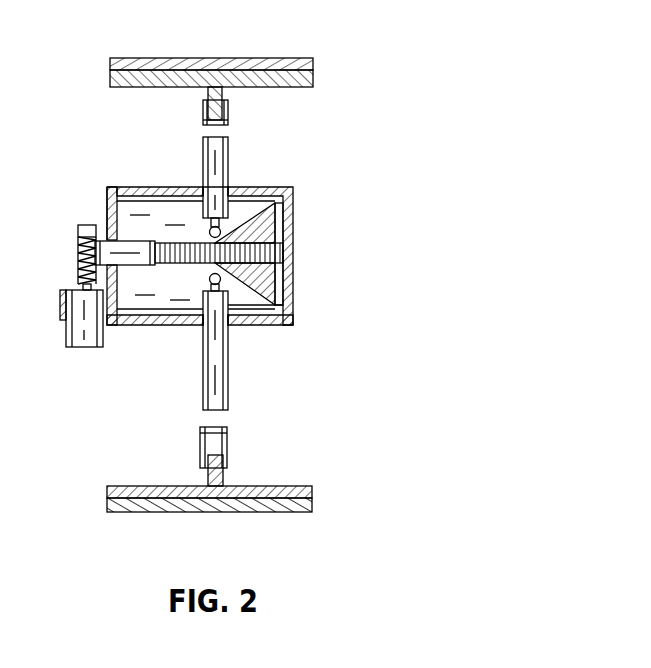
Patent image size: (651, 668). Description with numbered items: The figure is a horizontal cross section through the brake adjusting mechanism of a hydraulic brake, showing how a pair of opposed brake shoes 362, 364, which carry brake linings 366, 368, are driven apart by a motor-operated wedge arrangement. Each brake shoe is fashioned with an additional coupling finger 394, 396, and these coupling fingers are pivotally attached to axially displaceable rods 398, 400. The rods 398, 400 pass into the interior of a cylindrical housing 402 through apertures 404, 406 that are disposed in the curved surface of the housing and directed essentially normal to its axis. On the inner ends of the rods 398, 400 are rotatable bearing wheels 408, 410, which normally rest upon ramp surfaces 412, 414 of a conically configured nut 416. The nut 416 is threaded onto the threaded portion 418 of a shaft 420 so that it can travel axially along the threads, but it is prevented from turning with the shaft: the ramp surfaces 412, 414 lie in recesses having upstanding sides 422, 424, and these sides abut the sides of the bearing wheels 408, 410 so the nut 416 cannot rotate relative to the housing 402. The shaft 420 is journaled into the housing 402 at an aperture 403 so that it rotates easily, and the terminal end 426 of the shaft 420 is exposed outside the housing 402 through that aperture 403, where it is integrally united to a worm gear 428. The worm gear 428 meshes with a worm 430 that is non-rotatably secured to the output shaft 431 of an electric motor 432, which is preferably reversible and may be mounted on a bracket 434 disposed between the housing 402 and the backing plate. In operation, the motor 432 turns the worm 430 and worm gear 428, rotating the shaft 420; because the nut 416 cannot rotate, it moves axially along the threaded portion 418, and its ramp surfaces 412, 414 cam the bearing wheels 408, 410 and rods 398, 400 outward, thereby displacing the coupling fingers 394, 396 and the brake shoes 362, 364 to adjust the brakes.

The brake shoe 362 is at (318, 82).
The brake shoe 364 is at (290, 488).
The brake lining 366 is at (318, 62).
The brake lining 368 is at (290, 512).
The coupling finger 394 is at (206, 96).
The coupling finger 396 is at (208, 478).
The axially displaceable rod 398 is at (218, 160).
The axially displaceable rod 400 is at (229, 362).
The cylindrical housing 402 is at (300, 238).
The aperture 403 is at (121, 292).
The aperture 404 is at (230, 189).
The aperture 406 is at (229, 326).
The bearing wheel 408 is at (207, 232).
The bearing wheel 410 is at (208, 281).
The ramp surface 412 is at (292, 191).
The ramp surface 414 is at (290, 326).
The conically configured nut 416 is at (245, 270).
The threaded portion 418 is at (285, 257).
The shaft 420 is at (137, 207).
The upstanding side 422 is at (248, 224).
The upstanding side 424 is at (290, 300).
The terminal end 426 is at (97, 240).
The worm gear 428 is at (76, 230).
The worm 430 is at (76, 250).
The output shaft 431 is at (80, 277).
The electric motor 432 is at (80, 345).
The bracket 434 is at (60, 302).